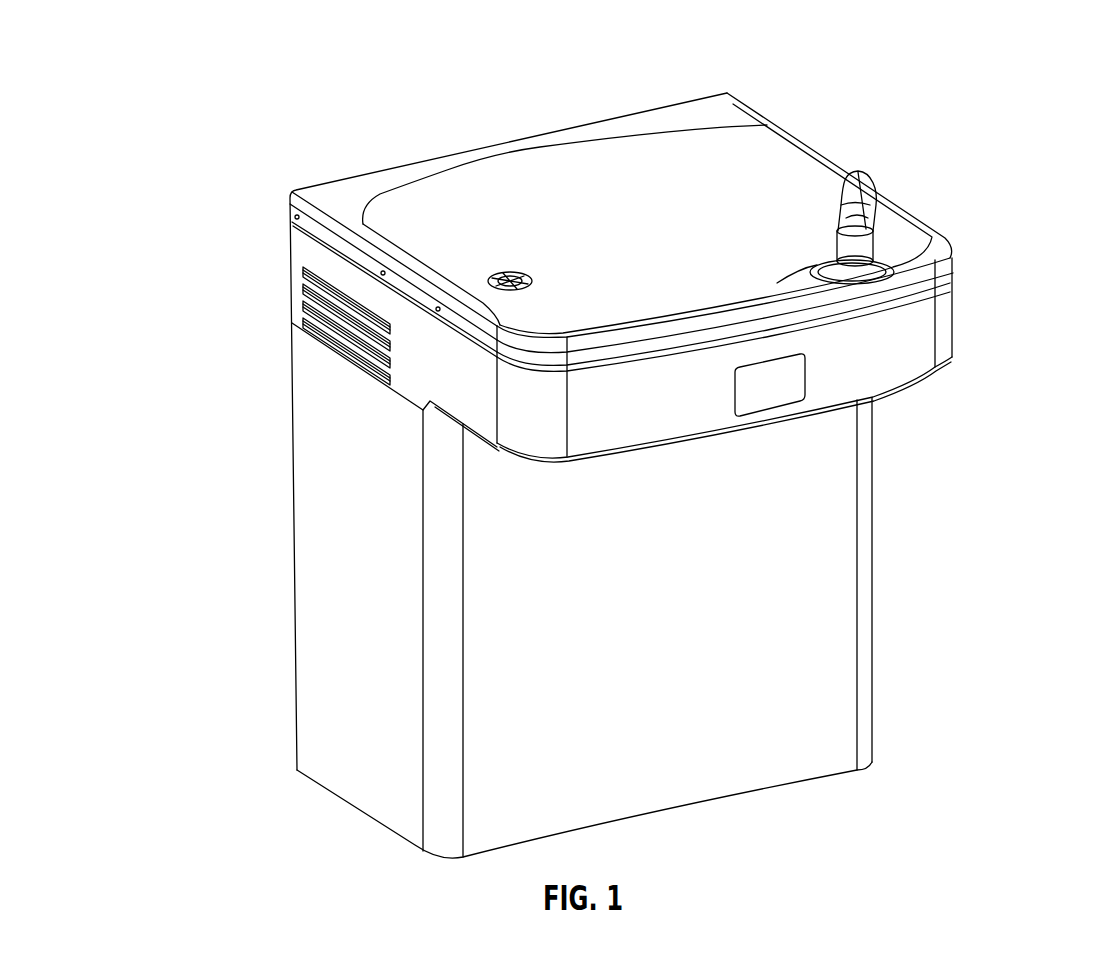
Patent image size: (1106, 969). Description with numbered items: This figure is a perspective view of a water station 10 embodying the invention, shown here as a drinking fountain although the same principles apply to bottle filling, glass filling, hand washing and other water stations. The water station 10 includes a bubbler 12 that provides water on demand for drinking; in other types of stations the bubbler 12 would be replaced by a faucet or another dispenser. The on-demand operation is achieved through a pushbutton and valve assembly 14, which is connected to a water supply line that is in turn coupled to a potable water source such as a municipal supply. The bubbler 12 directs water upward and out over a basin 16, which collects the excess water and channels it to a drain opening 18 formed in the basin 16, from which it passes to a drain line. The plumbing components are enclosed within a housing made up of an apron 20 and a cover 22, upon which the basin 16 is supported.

The water station 10 is at (224, 181).
The bubbler 12 is at (870, 173).
The pushbutton and valve assembly 14 is at (783, 375).
The basin 16 is at (727, 207).
The drain opening 18 is at (507, 272).
The apron 20 is at (900, 346).
The cover 22 is at (797, 655).